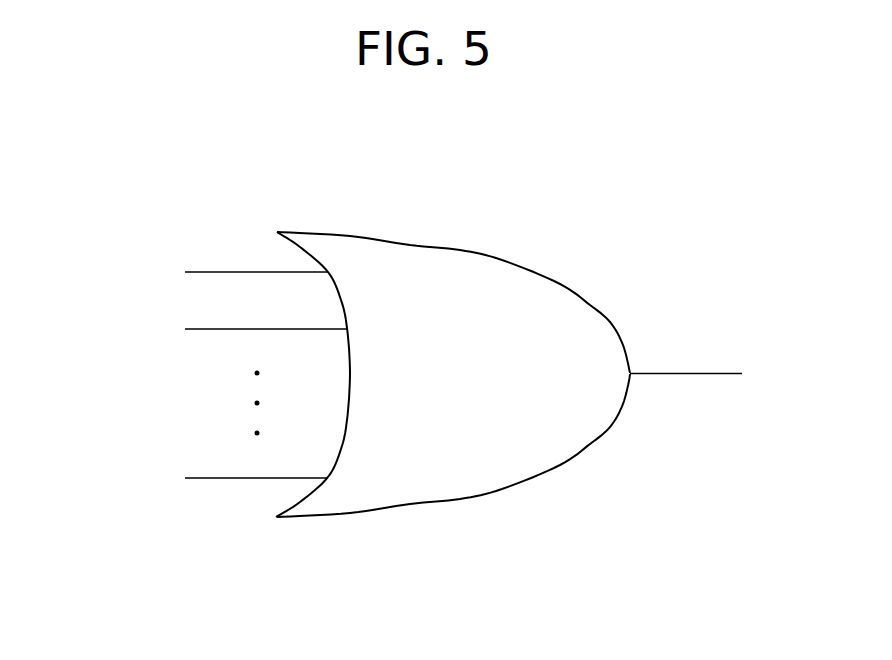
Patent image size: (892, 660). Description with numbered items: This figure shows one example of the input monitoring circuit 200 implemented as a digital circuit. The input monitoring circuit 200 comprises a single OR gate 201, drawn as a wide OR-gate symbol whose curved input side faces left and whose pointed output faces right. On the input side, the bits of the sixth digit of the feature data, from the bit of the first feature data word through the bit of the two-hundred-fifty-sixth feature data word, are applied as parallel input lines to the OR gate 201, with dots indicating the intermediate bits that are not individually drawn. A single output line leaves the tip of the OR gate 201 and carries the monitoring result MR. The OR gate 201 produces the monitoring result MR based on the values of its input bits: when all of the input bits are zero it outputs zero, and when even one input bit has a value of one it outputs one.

The input monitoring circuit 200 is at (730, 162).
The OR gate 201 is at (502, 260).
The monitoring result MR is at (702, 375).